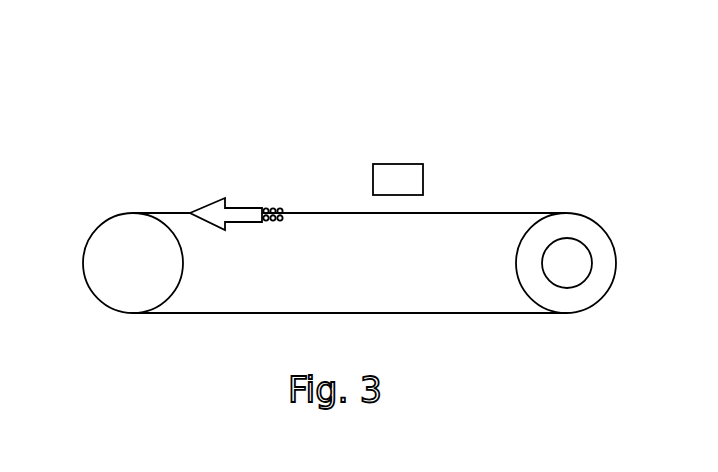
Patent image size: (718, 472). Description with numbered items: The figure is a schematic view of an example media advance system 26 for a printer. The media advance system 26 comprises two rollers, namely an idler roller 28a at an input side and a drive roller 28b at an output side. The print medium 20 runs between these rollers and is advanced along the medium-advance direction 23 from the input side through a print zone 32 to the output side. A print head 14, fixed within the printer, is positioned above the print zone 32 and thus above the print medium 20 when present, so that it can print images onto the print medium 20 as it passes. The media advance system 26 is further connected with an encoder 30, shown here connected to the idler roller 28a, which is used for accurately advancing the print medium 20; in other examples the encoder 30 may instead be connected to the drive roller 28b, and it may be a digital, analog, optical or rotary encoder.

The print head 14 is at (407, 164).
The print medium 20 is at (500, 213).
The medium-advance direction 23 is at (248, 223).
The media advance system 26 is at (178, 122).
The idler roller 28a is at (598, 227).
The drive roller 28b is at (117, 213).
The encoder 30 is at (589, 275).
The print zone 32 is at (380, 207).